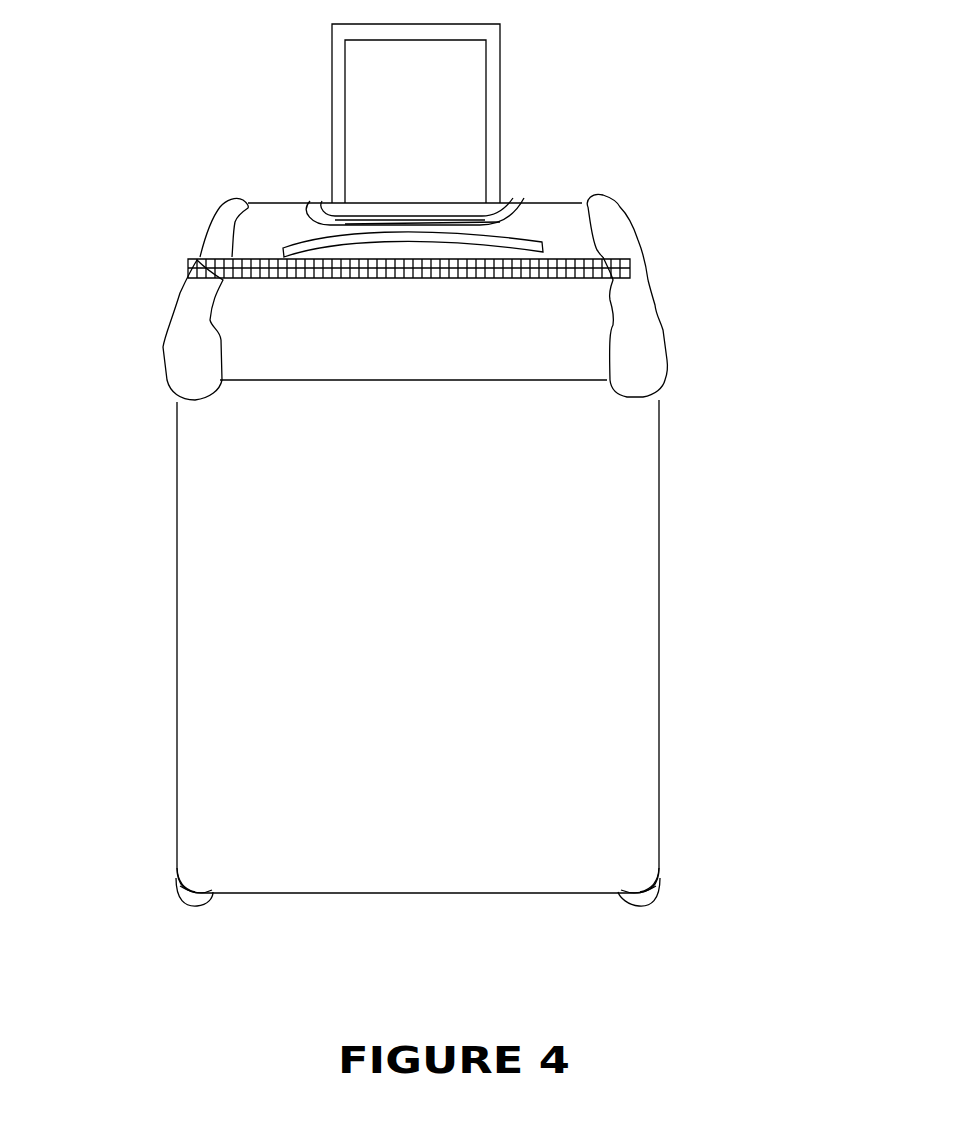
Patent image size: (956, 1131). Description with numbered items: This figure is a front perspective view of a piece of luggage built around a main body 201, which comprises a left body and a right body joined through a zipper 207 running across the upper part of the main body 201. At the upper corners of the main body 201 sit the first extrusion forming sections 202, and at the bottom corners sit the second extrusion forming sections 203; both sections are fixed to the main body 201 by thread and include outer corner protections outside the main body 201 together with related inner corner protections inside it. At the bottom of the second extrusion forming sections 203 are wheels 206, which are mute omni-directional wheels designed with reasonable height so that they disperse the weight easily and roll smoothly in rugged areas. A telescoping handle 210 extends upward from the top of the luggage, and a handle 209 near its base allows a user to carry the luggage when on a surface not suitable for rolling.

The main body 201 is at (588, 476).
The first extrusion forming section 202 is at (165, 345).
The second extrusion forming section 203 is at (178, 862).
The wheels 206 is at (190, 885).
The zipper 207 is at (617, 251).
The handle 209 is at (515, 203).
The telescoping handle 210 is at (486, 135).